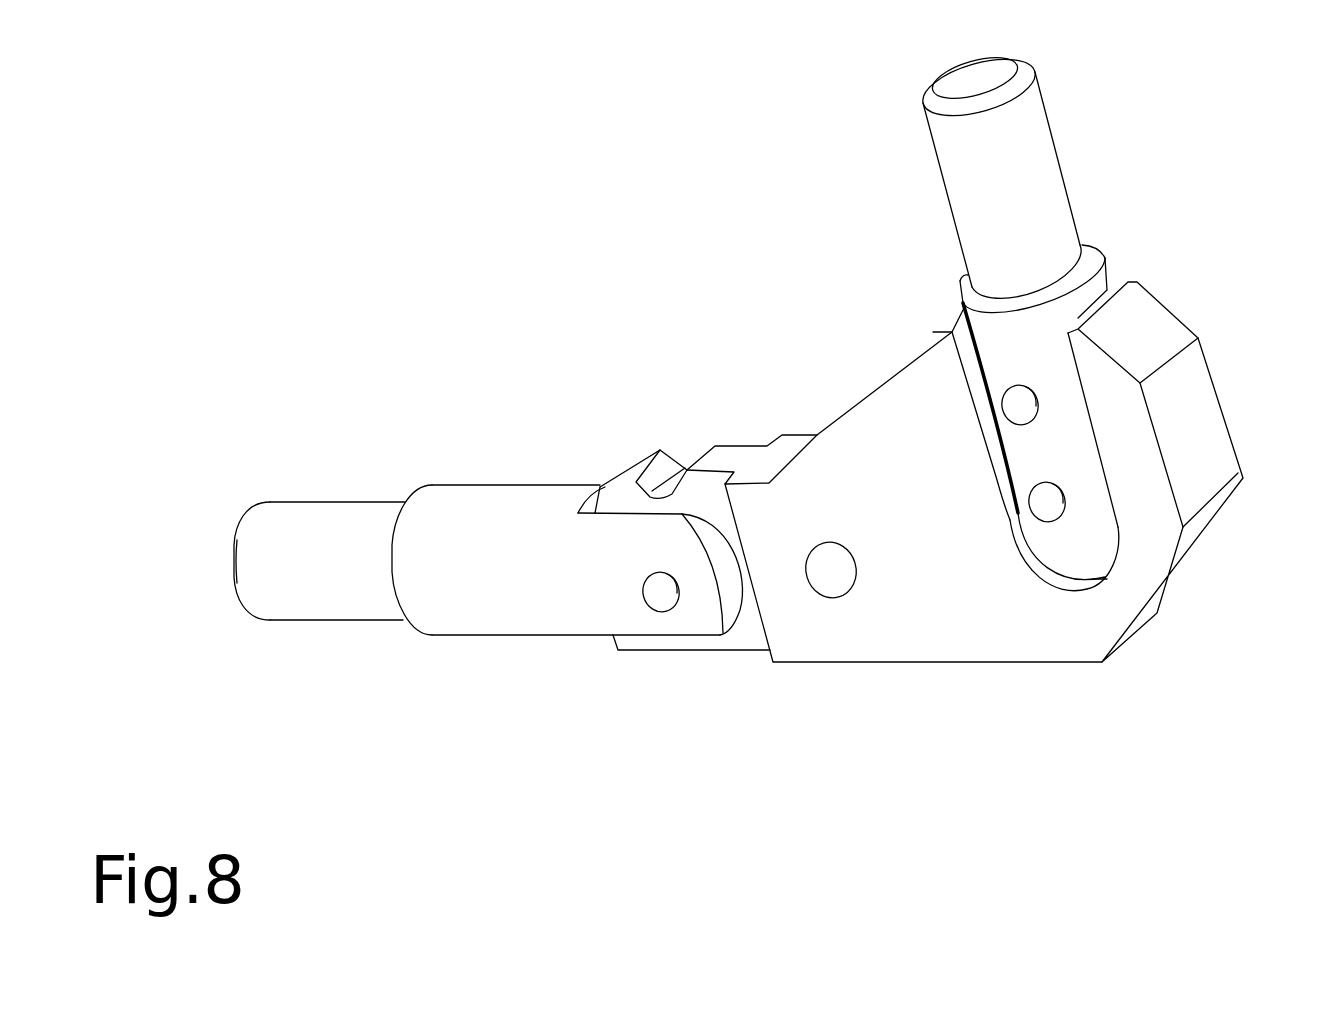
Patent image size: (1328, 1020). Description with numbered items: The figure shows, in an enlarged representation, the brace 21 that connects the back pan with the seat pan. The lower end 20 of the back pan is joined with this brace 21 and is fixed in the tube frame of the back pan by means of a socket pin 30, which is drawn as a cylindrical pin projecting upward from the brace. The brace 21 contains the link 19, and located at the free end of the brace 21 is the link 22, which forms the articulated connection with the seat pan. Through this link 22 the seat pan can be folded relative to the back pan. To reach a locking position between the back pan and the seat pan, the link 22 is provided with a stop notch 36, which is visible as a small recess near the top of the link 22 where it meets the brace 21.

The link 19 is at (833, 577).
The lower end of the back pan 20 is at (1070, 550).
The brace 21 is at (926, 605).
The link 22 is at (658, 597).
The socket pin 30 is at (1008, 203).
The stop notch 36 is at (652, 473).